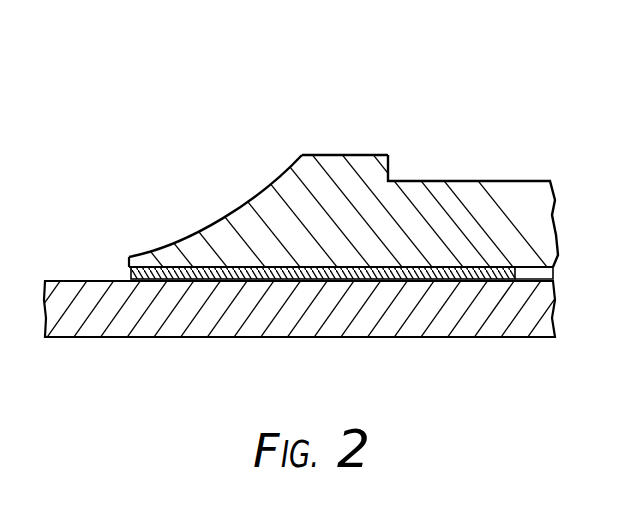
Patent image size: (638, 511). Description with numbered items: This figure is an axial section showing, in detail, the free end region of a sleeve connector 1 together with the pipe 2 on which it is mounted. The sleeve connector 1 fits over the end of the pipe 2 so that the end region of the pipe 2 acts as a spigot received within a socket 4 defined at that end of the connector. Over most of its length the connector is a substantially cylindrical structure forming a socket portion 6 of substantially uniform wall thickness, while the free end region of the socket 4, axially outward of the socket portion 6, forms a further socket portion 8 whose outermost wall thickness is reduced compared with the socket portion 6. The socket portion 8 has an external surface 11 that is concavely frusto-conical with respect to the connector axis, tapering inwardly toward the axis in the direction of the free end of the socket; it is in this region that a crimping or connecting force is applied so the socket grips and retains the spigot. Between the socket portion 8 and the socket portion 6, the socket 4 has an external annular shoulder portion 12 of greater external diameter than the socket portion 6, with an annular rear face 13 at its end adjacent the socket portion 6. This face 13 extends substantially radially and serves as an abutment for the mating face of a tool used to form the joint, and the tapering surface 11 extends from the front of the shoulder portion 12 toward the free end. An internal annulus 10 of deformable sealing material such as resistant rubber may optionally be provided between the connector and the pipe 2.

The sleeve connector 1 is at (493, 96).
The pipe 2 is at (96, 324).
The socket 4 is at (387, 223).
The socket portion of substantially uniform wall thickness 6 is at (505, 208).
The socket portion of reduced wall thickness 8 is at (297, 230).
The internal annulus 10 is at (480, 278).
The external surface 11 is at (217, 222).
The external annular shoulder portion 12 is at (343, 170).
The annular rear face 13 is at (393, 166).